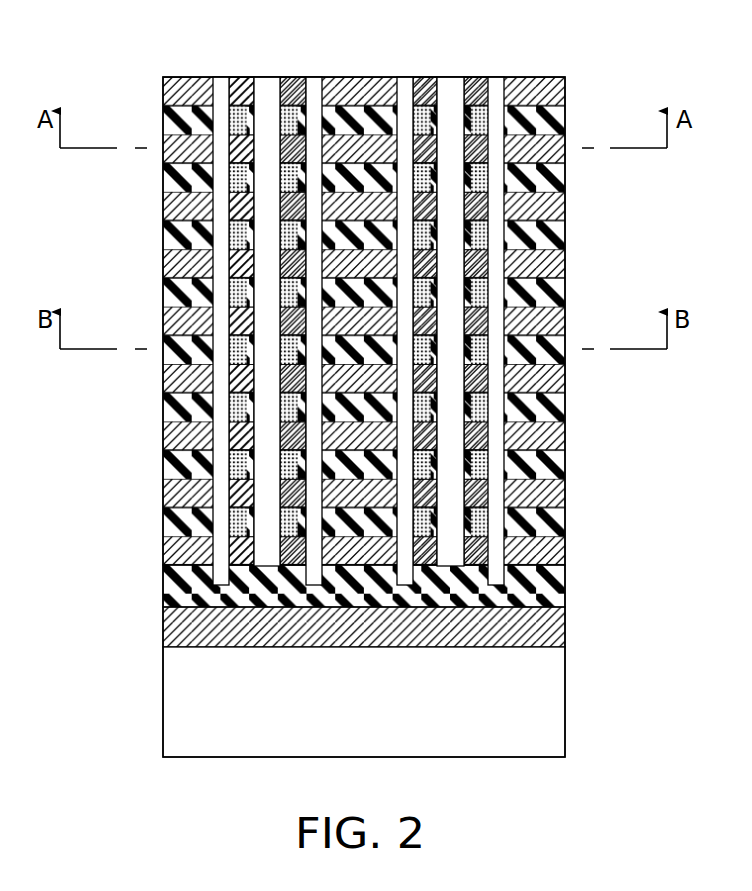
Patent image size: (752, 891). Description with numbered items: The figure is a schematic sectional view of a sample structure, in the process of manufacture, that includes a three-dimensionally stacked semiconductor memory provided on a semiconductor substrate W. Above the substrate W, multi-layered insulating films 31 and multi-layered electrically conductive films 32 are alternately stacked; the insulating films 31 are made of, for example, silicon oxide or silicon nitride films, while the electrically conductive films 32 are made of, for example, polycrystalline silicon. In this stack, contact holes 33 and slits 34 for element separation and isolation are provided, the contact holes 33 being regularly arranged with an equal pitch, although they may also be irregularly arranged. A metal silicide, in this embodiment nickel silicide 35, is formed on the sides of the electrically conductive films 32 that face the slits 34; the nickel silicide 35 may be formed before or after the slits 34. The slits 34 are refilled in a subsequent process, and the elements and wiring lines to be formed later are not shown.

The insulating film 31 is at (548, 92).
The electrically conductive film 32 is at (556, 118).
The contact hole 33 is at (495, 206).
The slit 34 is at (450, 266).
The nickel silicide 35 is at (473, 297).
The semiconductor substrate W is at (537, 703).